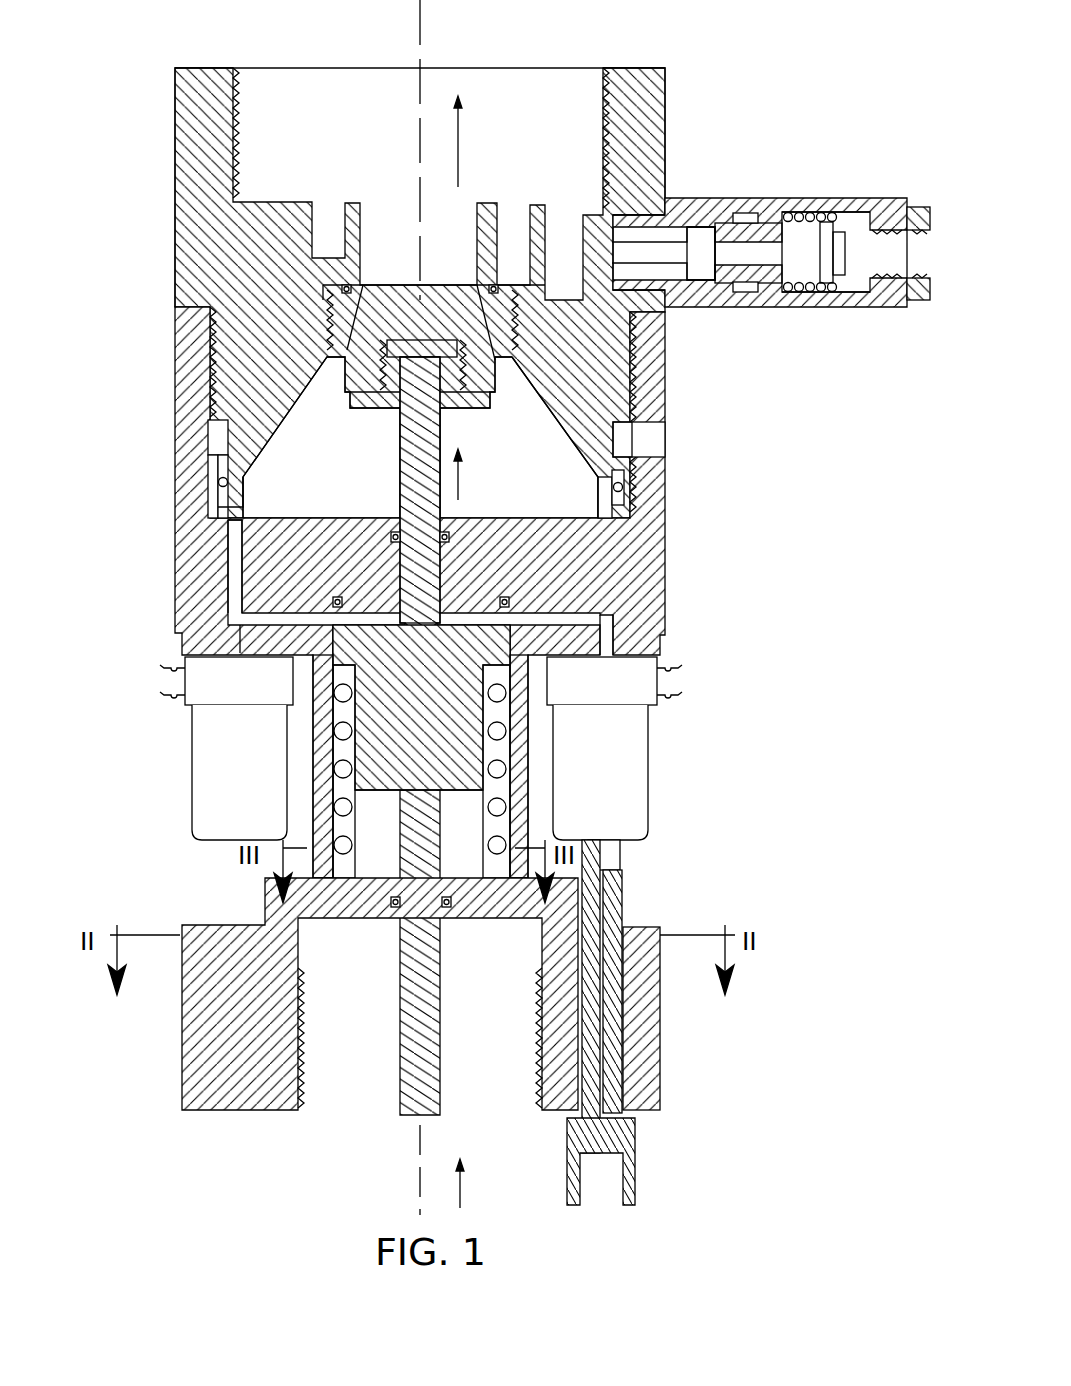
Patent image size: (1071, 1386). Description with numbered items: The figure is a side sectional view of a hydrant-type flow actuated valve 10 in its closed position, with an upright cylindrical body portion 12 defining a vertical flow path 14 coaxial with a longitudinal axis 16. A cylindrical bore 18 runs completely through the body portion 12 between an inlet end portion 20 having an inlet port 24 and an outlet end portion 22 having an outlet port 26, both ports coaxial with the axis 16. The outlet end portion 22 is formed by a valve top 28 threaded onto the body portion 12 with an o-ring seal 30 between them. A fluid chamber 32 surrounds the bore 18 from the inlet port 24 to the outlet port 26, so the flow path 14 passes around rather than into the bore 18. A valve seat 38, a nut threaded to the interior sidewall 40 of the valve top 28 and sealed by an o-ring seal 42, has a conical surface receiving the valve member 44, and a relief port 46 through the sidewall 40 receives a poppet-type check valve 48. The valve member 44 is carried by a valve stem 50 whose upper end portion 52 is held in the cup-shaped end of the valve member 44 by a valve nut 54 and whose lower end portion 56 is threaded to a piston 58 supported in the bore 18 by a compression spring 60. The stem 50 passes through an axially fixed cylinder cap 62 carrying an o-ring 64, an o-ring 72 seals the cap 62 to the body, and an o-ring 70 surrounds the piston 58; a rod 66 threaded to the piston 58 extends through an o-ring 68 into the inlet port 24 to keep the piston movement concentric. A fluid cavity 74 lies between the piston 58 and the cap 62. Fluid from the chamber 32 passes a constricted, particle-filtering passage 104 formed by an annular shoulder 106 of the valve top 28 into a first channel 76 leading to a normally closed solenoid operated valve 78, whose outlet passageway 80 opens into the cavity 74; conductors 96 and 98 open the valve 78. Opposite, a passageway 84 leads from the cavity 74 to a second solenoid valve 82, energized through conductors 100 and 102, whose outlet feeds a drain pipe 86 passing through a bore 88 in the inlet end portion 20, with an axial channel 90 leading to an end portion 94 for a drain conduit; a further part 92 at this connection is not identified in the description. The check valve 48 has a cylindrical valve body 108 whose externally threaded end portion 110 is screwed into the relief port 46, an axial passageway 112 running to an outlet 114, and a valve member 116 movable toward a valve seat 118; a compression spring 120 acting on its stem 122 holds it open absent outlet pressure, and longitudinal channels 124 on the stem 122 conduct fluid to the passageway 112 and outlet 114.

The flow actuated valve 10 is at (167, 66).
The body portion 12 is at (200, 607).
The flow path 14 is at (458, 140).
The longitudinal axis 16 is at (421, 38).
The cylindrical bore 18 is at (333, 827).
The inlet end portion 20 is at (200, 1070).
The outlet end portion 22 is at (667, 100).
The inlet port 24 is at (290, 1075).
The outlet port 26 is at (235, 97).
The valve top 28 is at (198, 142).
The o-ring seal 30 is at (638, 446).
The fluid chamber 32 is at (542, 449).
The valve seat 38 is at (502, 345).
The interior sidewall 40 is at (300, 290).
The o-ring seal 42 is at (490, 285).
The valve member 44 is at (360, 363).
The relief port 46 is at (663, 232).
The check valve 48 is at (758, 197).
The valve stem 50 is at (422, 473).
The upper end portion 52 is at (425, 365).
The valve nut 54 is at (362, 392).
The lower end portion 56 is at (440, 650).
The piston 58 is at (382, 720).
The spring 60 is at (313, 707).
The cylinder cap 62 is at (494, 557).
The o-ring 64 is at (447, 532).
The rod 66 is at (417, 987).
The o-ring 68 is at (450, 905).
The o-ring 70 is at (495, 635).
The o-ring 72 is at (335, 600).
The fluid cavity 74 is at (333, 655).
The first channel 76 is at (213, 537).
The solenoid operated valve 78 is at (313, 660).
The passageway 80 is at (235, 640).
The second solenoid operated valve 82 is at (650, 800).
The passageway 84 is at (648, 628).
The drain pipe 86 is at (605, 957).
The bore 88 is at (612, 1045).
The axial channel 90 is at (603, 1113).
The threaded stud 92 is at (612, 853).
The end portion 94 is at (608, 1178).
The conductor 96 is at (160, 672).
The conductor 98 is at (160, 700).
The conductor 100 is at (692, 680).
The conductor 102 is at (692, 708).
The constricted passage 104 is at (243, 510).
The annular shoulder 106 is at (600, 512).
The cylindrical valve body 108 is at (820, 295).
The externally threaded end portion 110 is at (610, 240).
The axial passageway 112 is at (795, 293).
The outlet 114 is at (925, 272).
The valve member 116 is at (822, 232).
The valve seat 118 is at (838, 262).
The compression spring 120 is at (790, 213).
The stem 122 is at (742, 283).
The channels 124 is at (763, 250).